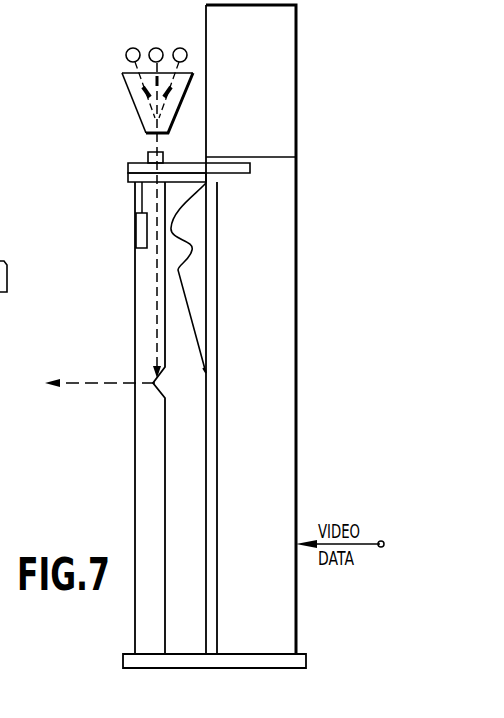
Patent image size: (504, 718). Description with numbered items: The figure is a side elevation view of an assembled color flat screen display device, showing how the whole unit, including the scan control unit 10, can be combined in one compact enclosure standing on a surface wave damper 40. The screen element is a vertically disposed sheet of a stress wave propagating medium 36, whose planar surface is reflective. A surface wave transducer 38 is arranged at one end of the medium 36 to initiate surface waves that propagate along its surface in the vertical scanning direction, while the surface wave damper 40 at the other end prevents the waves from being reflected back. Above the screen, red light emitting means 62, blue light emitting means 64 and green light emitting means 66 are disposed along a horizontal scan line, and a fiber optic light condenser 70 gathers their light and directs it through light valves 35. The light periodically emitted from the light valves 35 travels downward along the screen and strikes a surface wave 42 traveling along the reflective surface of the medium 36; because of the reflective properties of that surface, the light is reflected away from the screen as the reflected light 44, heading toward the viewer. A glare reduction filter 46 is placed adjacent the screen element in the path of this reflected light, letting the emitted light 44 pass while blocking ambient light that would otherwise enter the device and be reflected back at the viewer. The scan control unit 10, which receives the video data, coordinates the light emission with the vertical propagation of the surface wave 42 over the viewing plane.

The scan control unit 10 is at (238, 452).
The light valves 35 is at (148, 153).
The stress wave propagating medium 36 is at (230, 241).
The surface wave transducer 38 is at (136, 219).
The surface wave damper 40 is at (306, 658).
The surface wave 42 is at (153, 387).
The reflected light 44 is at (91, 380).
The glare reduction filter 46 is at (135, 483).
The red light emitting means 62 is at (128, 50).
The blue light emitting means 64 is at (160, 23).
The green light emitting means 66 is at (190, 33).
The fiber optic light condenser 70 is at (132, 100).